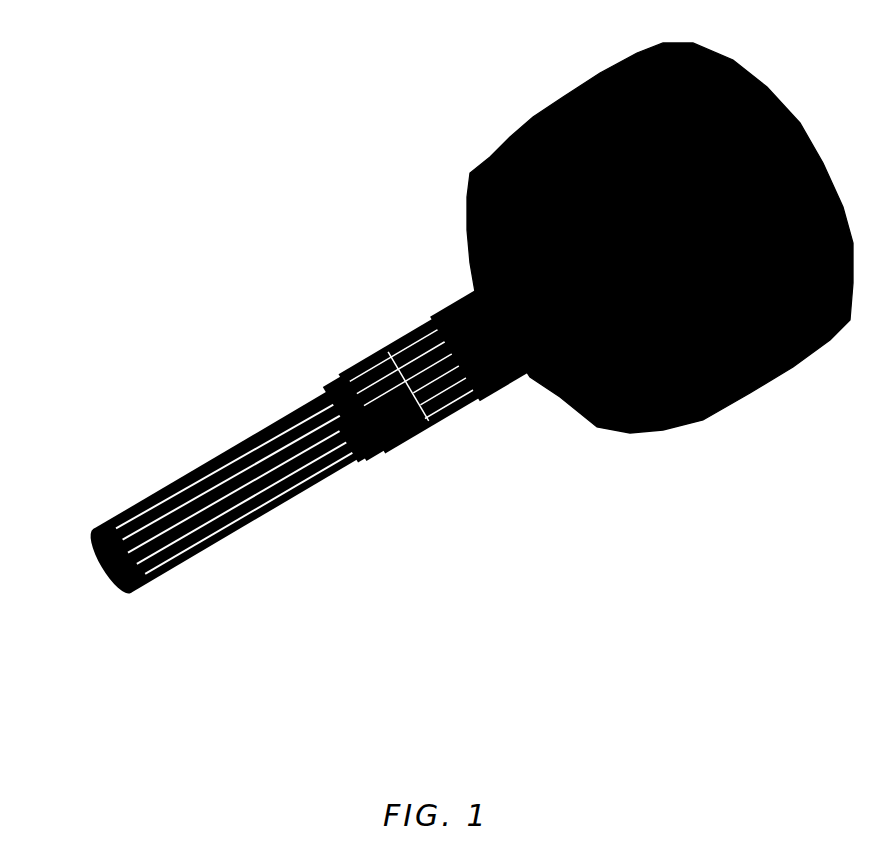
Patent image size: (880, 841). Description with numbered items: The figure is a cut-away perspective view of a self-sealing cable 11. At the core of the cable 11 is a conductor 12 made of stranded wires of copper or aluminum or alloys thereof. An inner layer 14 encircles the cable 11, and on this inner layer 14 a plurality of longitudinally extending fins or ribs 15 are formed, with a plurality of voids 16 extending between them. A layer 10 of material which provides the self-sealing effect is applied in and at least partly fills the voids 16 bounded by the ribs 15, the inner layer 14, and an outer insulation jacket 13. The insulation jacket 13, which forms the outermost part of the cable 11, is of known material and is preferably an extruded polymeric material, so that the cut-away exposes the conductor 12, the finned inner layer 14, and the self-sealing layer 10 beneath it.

The layer of self-sealing material 10 is at (313, 403).
The cable 11 is at (592, 75).
The conductor 12 is at (102, 582).
The outer insulation jacket 13 is at (473, 417).
The inner layer 14 is at (362, 457).
The fins or ribs 15 is at (327, 383).
The voids 16 is at (377, 353).